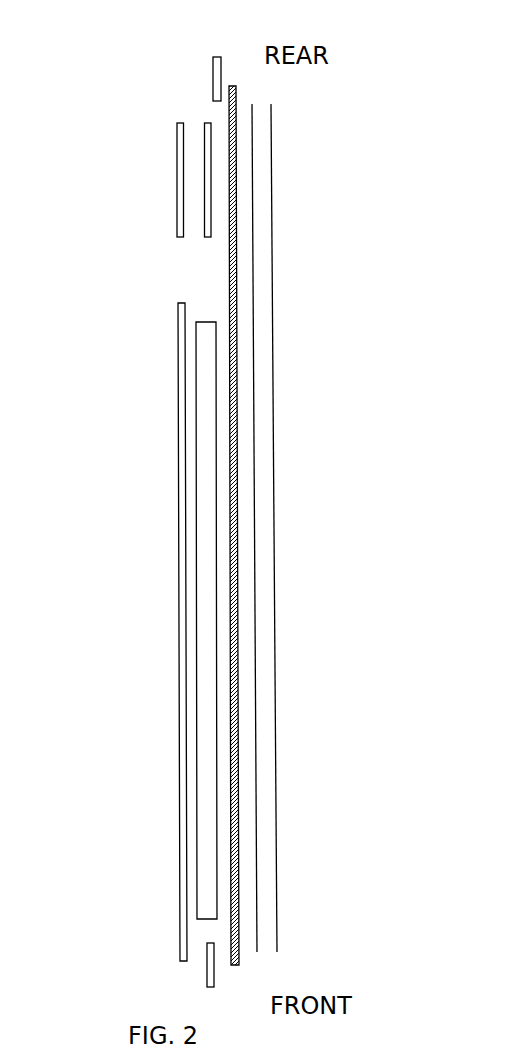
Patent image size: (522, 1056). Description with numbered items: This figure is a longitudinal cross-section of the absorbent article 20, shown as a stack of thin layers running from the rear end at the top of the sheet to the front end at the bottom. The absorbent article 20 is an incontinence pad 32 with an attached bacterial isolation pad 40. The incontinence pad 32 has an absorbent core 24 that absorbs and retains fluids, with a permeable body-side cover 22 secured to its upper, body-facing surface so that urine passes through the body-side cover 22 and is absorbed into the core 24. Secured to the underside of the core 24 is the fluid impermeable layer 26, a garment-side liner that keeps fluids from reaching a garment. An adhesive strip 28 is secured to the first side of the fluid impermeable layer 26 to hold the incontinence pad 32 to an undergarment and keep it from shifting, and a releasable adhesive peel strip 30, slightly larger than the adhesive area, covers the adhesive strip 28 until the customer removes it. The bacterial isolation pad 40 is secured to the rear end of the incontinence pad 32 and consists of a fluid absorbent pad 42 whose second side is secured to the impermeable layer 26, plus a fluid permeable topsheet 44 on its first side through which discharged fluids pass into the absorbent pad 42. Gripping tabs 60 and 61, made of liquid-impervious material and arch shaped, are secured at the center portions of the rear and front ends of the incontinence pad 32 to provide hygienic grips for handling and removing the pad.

The absorbent article 20 is at (113, 472).
The permeable body-side cover 22 is at (184, 652).
The absorbent core 24 is at (217, 782).
The fluid impermeable layer 26 is at (229, 283).
The adhesive strip 28 is at (253, 593).
The releasable adhesive peel strip 30 is at (274, 377).
The incontinence pad 32 is at (131, 528).
The bacterial isolation pad 40 is at (57, 142).
The fluid absorbent pad 42 is at (204, 217).
The fluid permeable topsheet 44 is at (177, 173).
The gripping tab 60 is at (213, 78).
The gripping tab 61 is at (207, 972).